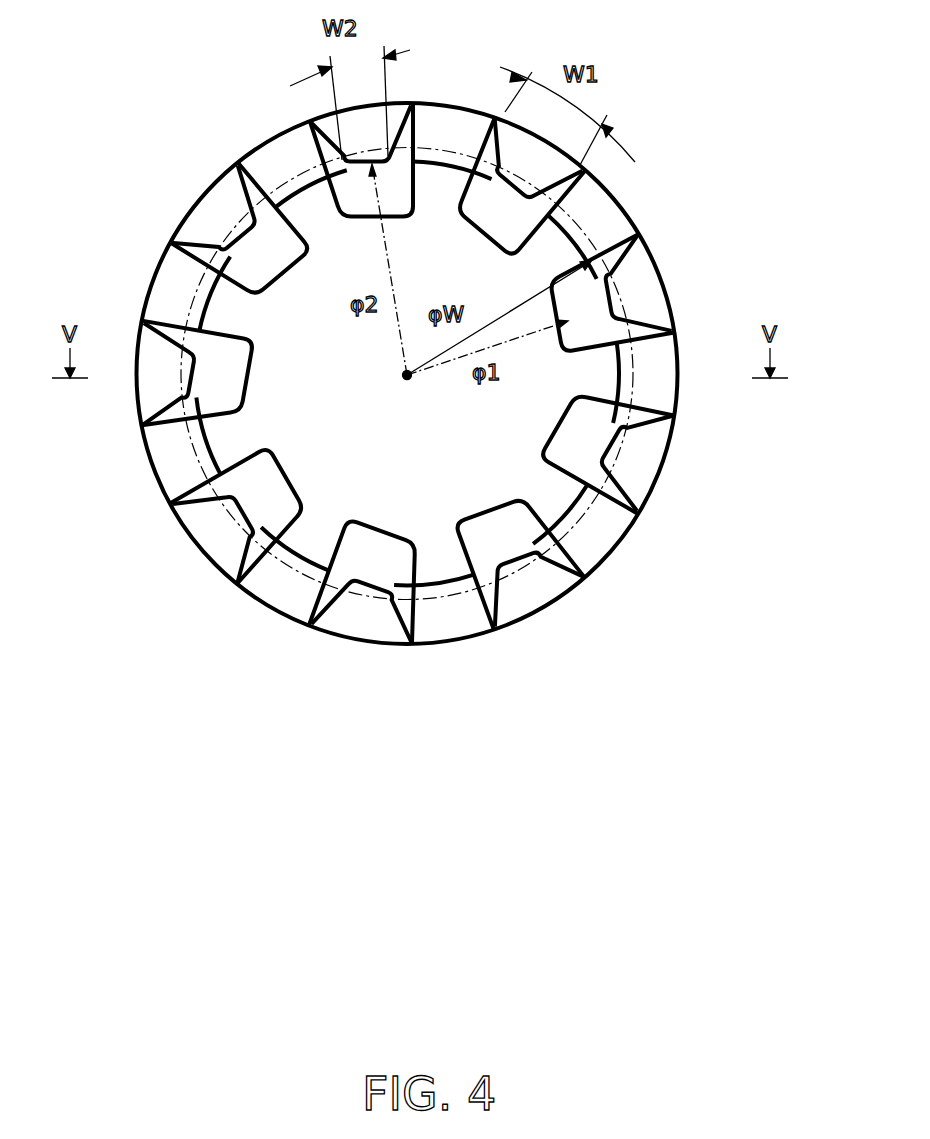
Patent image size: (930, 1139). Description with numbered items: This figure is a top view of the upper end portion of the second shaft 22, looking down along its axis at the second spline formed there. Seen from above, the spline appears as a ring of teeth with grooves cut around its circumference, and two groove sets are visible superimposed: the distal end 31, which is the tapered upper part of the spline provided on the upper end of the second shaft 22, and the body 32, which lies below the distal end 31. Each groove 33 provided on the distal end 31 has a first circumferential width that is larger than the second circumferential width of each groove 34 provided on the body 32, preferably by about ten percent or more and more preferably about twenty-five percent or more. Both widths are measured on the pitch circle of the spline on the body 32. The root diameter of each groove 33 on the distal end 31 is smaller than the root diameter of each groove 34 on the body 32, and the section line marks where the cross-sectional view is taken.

The second shaft 22 is at (237, 110).
The distal end 31 is at (590, 214).
The body 32 is at (442, 118).
The groove 33 is at (590, 302).
The groove 34 is at (384, 140).